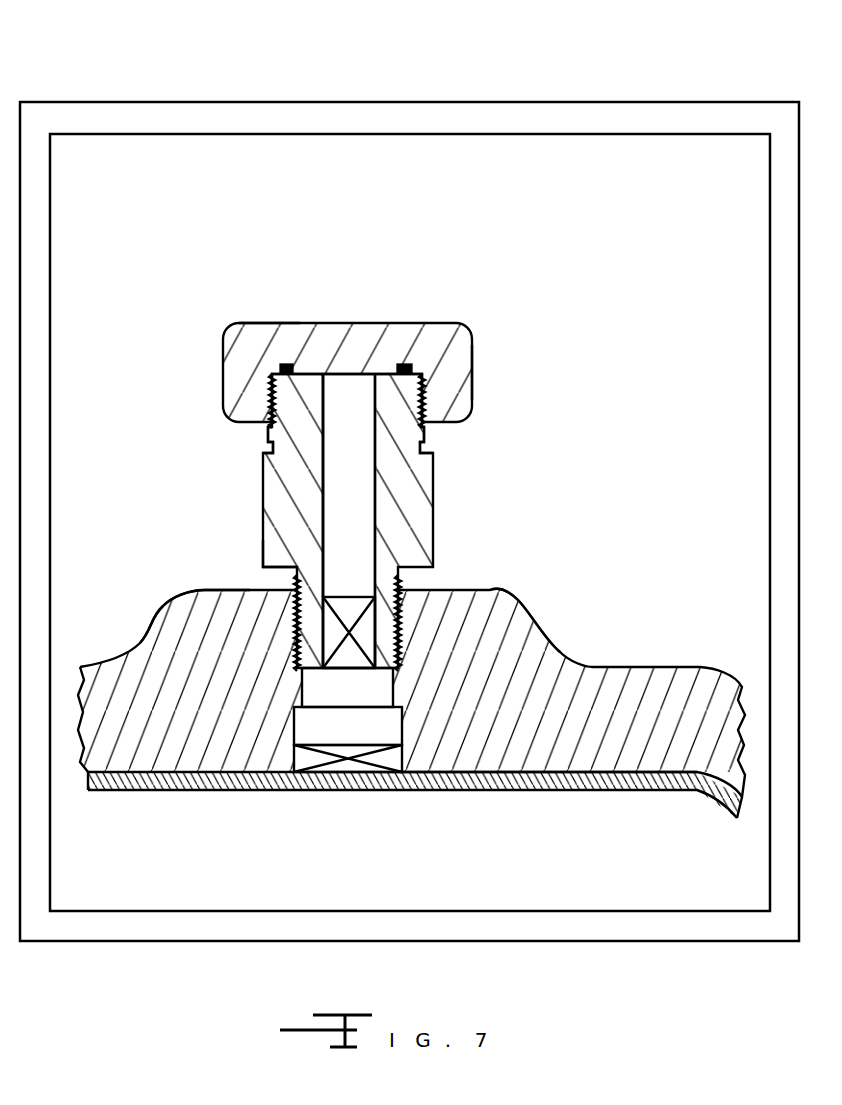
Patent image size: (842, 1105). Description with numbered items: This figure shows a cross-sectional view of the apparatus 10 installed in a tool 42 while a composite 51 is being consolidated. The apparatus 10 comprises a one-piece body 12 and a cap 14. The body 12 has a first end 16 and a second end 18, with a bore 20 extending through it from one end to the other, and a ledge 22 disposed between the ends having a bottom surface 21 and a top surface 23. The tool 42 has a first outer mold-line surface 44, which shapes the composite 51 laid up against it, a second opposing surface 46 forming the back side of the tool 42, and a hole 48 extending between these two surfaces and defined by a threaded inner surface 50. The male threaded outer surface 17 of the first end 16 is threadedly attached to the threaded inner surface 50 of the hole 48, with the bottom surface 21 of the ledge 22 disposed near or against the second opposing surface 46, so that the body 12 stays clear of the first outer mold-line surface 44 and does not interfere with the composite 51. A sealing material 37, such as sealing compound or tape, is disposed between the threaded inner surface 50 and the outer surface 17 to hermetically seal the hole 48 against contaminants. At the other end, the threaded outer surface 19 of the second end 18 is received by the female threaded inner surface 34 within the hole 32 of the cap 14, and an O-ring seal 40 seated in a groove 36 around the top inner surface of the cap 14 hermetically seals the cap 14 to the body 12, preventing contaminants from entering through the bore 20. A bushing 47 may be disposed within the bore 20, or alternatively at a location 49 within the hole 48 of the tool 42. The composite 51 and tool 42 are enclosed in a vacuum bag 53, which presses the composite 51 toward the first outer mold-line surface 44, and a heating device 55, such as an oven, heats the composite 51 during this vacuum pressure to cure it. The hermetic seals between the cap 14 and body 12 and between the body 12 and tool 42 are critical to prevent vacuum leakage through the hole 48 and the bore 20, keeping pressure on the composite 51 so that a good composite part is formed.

The apparatus 10 is at (531, 289).
The body 12 is at (435, 507).
The cap 14 is at (232, 357).
The first end 16 is at (293, 615).
The outer surface 17 is at (400, 599).
The second end 18 is at (423, 424).
The outer surface 19 is at (270, 410).
The bore 20 is at (348, 393).
The bottom surface 21 is at (280, 569).
The ledge 22 is at (435, 470).
The top surface 23 is at (270, 443).
The hole 32 is at (337, 393).
The inner surface 34 is at (273, 392).
The groove 36 is at (405, 368).
The sealing material 37 is at (400, 653).
The O-ring seal 40 is at (408, 372).
The tool 42 is at (497, 648).
The first outer mold-line surface 44 is at (175, 767).
The second opposing surface 46 is at (210, 590).
The bushing 47 is at (347, 605).
The hole 48 is at (347, 692).
The location 49 is at (378, 757).
The threaded inner surface 50 is at (403, 630).
The composite 51 is at (502, 780).
The vacuum bag 53 is at (433, 133).
The heating device 55 is at (256, 100).